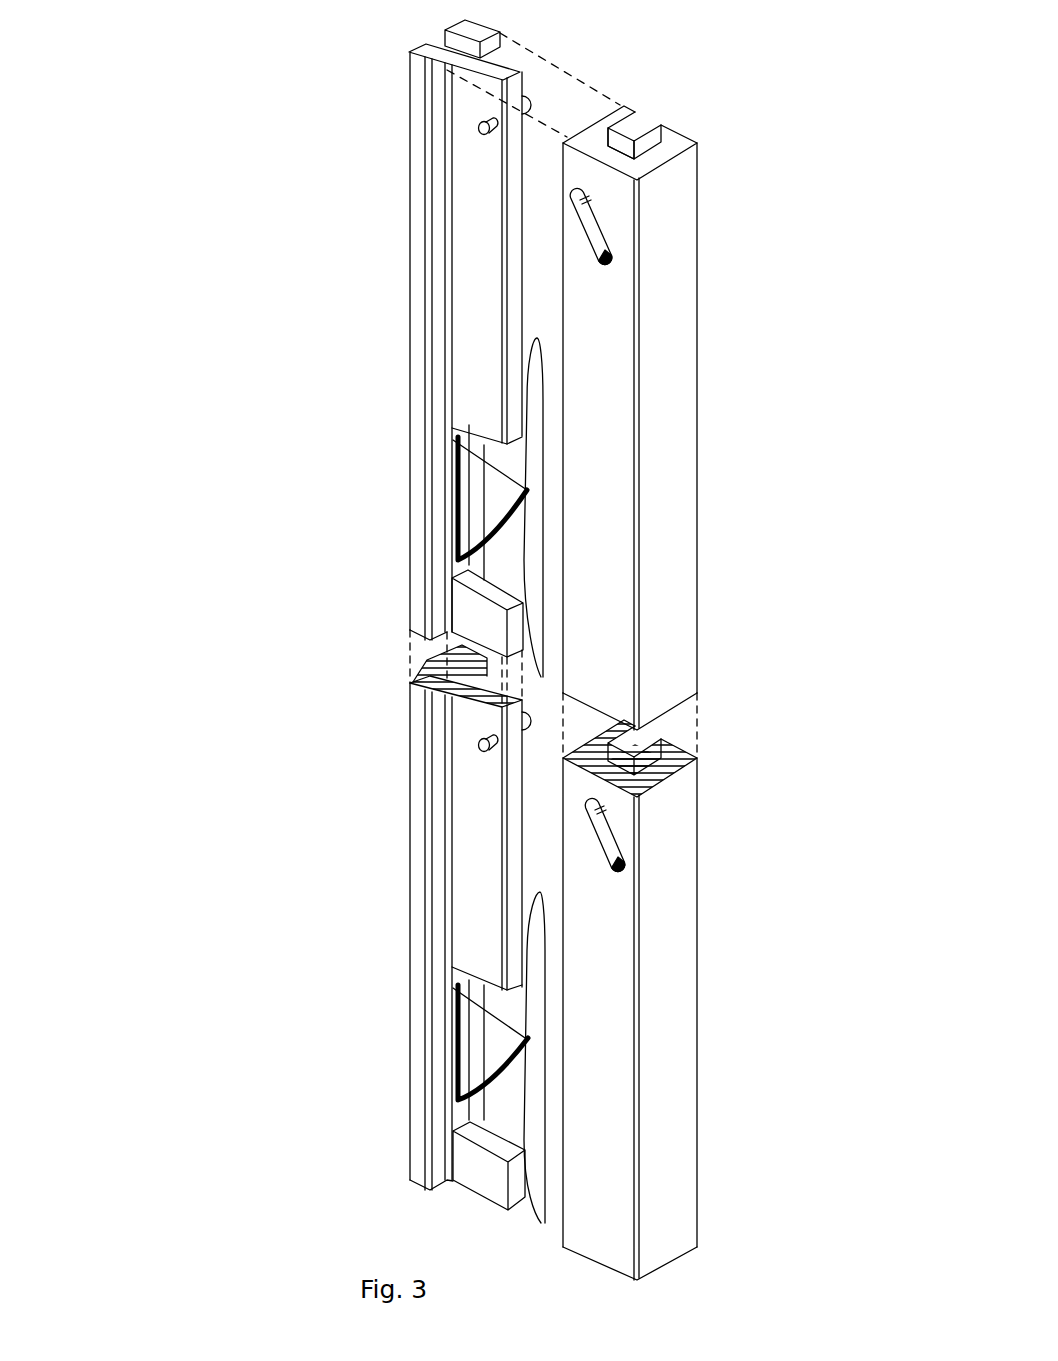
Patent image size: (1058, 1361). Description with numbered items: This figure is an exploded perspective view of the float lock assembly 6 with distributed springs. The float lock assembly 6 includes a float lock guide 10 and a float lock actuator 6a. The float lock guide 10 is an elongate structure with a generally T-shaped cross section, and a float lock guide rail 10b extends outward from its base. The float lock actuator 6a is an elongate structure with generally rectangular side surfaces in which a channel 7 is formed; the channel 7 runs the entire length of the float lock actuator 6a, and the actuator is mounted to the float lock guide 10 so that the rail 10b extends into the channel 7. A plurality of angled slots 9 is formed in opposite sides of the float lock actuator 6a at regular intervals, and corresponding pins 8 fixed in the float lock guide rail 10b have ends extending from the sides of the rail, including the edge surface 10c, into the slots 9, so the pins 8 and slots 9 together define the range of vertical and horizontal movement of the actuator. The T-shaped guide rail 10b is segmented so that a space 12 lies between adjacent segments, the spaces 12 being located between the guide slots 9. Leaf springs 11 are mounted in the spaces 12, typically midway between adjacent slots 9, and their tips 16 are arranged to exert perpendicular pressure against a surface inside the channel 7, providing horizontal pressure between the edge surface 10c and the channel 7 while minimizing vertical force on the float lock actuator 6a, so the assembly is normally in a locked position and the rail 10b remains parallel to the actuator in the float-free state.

The float lock assembly 6 is at (355, 617).
The float lock actuator 6a is at (660, 527).
The channel 7 is at (612, 133).
The pins 8 is at (480, 123).
The angled slots 9 is at (608, 258).
The float lock guide 10 is at (409, 180).
The float lock guide rail 10b is at (462, 27).
The edge surface 10c is at (518, 268).
The leaf springs 11 is at (485, 530).
The space 12 is at (508, 780).
The tips 16 is at (483, 437).